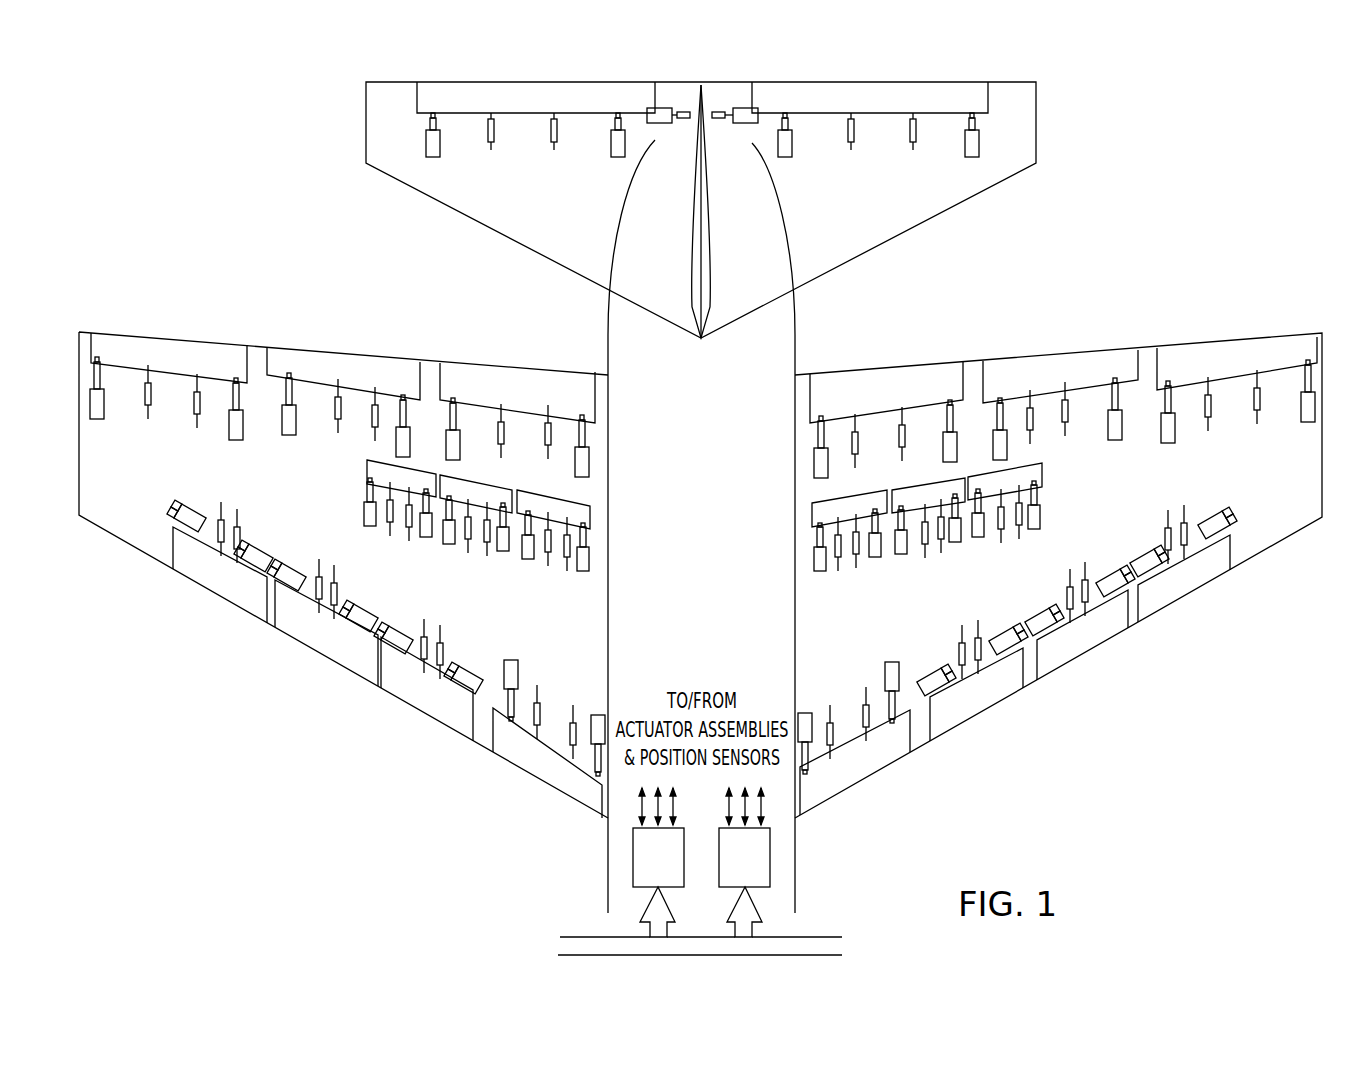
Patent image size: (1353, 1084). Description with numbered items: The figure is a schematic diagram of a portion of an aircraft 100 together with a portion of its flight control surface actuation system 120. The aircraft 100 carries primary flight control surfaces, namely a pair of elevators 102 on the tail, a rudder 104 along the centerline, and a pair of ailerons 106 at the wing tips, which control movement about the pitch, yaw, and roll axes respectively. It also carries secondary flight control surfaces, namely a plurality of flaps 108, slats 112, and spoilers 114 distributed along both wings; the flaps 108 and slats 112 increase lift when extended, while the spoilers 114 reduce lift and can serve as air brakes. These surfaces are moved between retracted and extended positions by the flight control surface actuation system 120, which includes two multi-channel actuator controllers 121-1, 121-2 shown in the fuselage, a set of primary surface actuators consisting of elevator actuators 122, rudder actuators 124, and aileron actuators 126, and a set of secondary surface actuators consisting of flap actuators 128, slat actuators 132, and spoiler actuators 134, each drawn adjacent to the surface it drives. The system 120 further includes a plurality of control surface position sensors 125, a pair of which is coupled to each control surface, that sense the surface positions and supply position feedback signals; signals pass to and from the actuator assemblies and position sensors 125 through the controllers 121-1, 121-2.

The aircraft 100 is at (263, 217).
The elevators 102 is at (572, 88).
The rudder 104 is at (700, 100).
The ailerons 106 is at (170, 345).
The flaps 108 is at (302, 360).
The slats 112 is at (220, 592).
The spoilers 114 is at (363, 472).
The flight control surface actuation system 120 is at (778, 343).
The multi-channel actuator controller 121-1 is at (640, 860).
The multi-channel actuator controller 121-2 is at (765, 860).
The elevator actuators 122 is at (430, 160).
The rudder actuators 124 is at (660, 125).
The control surface position sensors 125 is at (491, 150).
The aileron actuators 126 is at (97, 420).
The flap actuators 128 is at (289, 436).
The slat actuators 132 is at (192, 527).
The spoiler actuators 134 is at (363, 510).